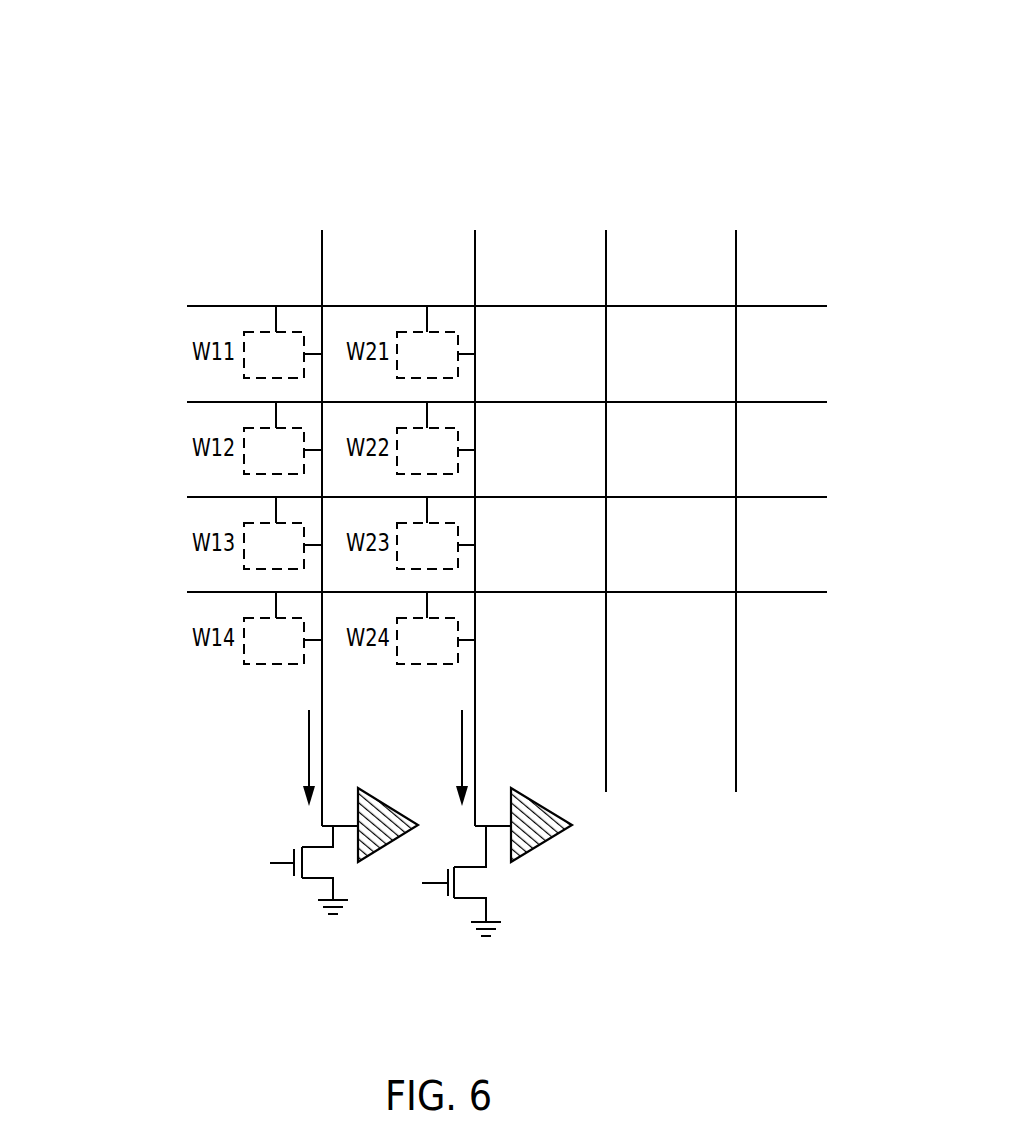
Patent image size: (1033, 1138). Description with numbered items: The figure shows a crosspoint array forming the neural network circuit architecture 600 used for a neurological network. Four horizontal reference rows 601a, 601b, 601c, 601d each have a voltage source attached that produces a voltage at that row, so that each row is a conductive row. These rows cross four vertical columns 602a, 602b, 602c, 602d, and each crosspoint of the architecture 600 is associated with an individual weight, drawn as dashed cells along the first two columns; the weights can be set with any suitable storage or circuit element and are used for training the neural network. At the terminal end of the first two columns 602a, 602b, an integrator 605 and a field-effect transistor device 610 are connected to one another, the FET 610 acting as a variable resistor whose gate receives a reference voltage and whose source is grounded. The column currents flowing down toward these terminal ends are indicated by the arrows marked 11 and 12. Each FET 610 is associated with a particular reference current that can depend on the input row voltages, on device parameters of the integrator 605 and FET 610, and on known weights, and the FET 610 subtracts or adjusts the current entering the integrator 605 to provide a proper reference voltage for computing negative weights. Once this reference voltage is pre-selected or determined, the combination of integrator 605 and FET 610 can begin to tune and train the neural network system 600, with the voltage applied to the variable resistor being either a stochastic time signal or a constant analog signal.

The neural network circuit architecture 600 is at (829, 53).
The reference row 601a is at (434, 304).
The reference row 601b is at (434, 400).
The reference row 601c is at (434, 495).
The reference row 601d is at (434, 590).
The column 602a is at (321, 504).
The column 602b is at (474, 504).
The column 602c is at (606, 487).
The column 602d is at (735, 487).
The integrator 605 is at (391, 806).
The field-effect transistor device 610 is at (294, 849).
The column current I1 11 is at (295, 758).
The column current I2 12 is at (448, 758).